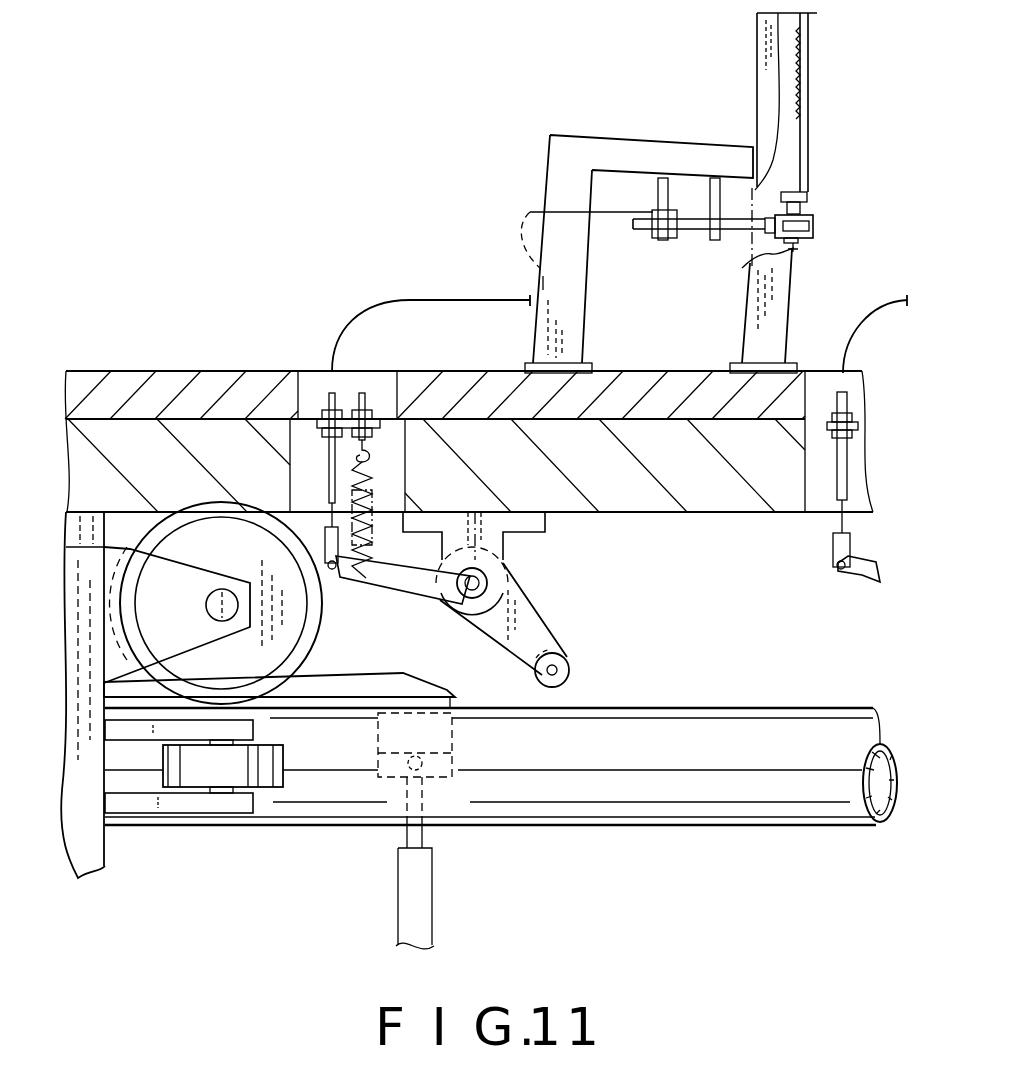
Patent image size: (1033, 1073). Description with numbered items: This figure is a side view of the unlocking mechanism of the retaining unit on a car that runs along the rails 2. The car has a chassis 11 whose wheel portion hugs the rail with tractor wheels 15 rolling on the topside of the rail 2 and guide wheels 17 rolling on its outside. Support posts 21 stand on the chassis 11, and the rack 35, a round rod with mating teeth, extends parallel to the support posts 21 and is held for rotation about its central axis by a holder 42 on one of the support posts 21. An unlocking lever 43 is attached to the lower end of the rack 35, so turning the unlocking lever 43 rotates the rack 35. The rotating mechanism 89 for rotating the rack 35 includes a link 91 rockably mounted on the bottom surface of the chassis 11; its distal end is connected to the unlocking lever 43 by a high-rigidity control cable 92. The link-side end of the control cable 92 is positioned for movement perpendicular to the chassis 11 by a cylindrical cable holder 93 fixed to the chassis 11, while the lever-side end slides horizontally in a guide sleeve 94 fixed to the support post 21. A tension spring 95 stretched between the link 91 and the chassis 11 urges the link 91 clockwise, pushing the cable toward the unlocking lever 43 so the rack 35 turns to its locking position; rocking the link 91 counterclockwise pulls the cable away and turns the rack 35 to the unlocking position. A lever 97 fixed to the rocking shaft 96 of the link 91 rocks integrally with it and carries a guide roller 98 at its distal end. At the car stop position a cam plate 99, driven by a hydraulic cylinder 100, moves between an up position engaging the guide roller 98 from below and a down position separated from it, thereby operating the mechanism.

The rail 2 is at (782, 818).
The chassis 11 is at (137, 382).
The tractor wheels 15 is at (318, 600).
The guide wheels 17 is at (270, 785).
The support post 21 is at (778, 302).
The rack 35 is at (807, 97).
The holder 42 is at (800, 194).
The unlocking lever 43 is at (814, 230).
The rotating mechanism 89 is at (398, 252).
The link 91 is at (410, 578).
The control cable 92 is at (356, 319).
The cable holder 93 is at (320, 417).
The guide sleeve 94 is at (688, 236).
The tension spring 95 is at (388, 479).
The rocking shaft 96 is at (488, 583).
The lever 97 is at (520, 618).
The guide roller 98 is at (582, 644).
The cam plate 99 is at (346, 686).
The hydraulic cylinder 100 is at (432, 905).